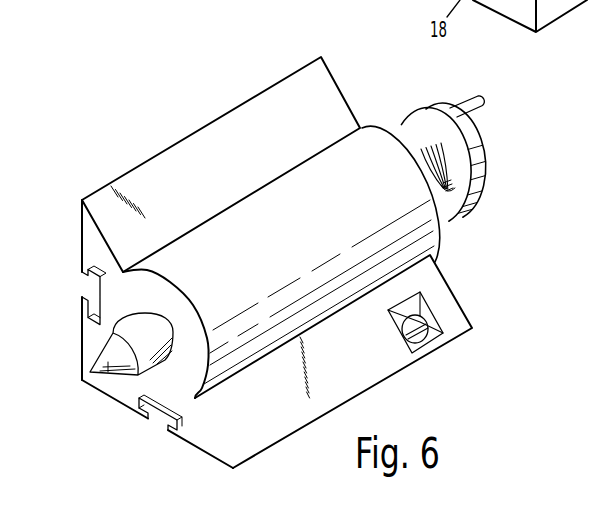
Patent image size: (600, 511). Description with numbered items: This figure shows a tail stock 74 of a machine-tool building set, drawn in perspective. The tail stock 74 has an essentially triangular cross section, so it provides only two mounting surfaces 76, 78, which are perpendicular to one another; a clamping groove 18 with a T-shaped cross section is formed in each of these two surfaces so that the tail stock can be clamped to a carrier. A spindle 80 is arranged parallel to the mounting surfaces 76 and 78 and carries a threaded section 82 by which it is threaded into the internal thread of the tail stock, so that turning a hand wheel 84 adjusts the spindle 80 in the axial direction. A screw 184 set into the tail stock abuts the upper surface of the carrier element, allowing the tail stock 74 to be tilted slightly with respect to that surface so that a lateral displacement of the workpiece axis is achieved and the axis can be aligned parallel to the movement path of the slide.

The tail stock 74 is at (348, 94).
The mounting surface 76 is at (82, 235).
The mounting surface 78 is at (197, 442).
The clamping groove 18 is at (93, 293).
The spindle 80 is at (107, 378).
The threaded section 82 is at (461, 190).
The hand wheel 84 is at (483, 153).
The screw 184 is at (428, 337).